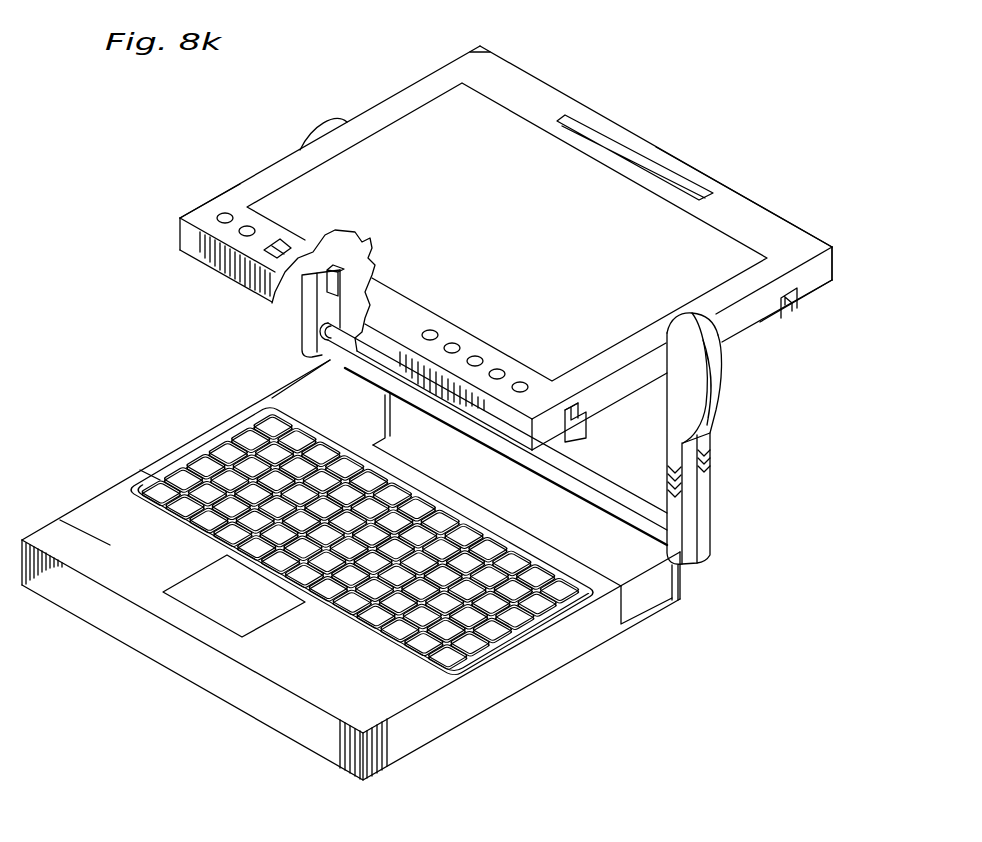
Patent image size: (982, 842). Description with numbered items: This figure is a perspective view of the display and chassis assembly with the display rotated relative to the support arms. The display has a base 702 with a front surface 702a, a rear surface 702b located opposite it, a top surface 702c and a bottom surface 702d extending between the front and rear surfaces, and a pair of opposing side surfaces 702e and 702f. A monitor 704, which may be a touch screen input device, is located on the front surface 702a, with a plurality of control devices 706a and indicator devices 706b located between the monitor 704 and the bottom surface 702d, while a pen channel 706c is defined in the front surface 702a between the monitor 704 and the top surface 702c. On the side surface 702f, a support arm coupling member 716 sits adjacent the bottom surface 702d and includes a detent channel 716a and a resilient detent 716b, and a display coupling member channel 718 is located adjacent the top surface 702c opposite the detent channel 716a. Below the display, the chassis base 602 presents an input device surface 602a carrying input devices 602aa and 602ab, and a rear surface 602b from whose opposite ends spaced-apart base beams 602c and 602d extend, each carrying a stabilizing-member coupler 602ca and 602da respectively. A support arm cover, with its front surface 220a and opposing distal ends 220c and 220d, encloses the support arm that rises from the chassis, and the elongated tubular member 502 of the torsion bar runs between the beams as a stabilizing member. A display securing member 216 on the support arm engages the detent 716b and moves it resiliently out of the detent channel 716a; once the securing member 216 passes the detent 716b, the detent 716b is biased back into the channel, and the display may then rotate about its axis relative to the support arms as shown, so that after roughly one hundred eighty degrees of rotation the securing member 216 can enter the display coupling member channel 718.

The base 702 is at (645, 138).
The front surface 702a is at (470, 60).
The rear surface 702b is at (738, 347).
The top surface 702c is at (722, 178).
The bottom surface 702d is at (212, 255).
The side surface 702e is at (197, 212).
The side surface 702f is at (820, 283).
The monitor 704 is at (518, 209).
The control devices 706a is at (225, 212).
The indicator devices 706b is at (292, 245).
The pen channel 706c is at (600, 115).
The support arm coupling member 716 is at (585, 398).
The detent channel 716a is at (578, 428).
The detent 716b is at (567, 430).
The display coupling member channel 718 is at (792, 308).
The display securing member 216 is at (370, 265).
The front surface 220a is at (302, 302).
The distal end 220c is at (302, 332).
The distal end 220d is at (320, 132).
The elongated tubular member 502 is at (606, 490).
The chassis base 602 is at (522, 690).
The input device surface 602a is at (118, 507).
The input device 602aa is at (182, 468).
The input device 602ab is at (208, 592).
The rear surface 602b is at (443, 481).
The base beam 602c is at (390, 420).
The stabilizing-member coupler 602ca is at (308, 378).
The base beam 602d is at (682, 583).
The stabilizing-member coupler 602da is at (640, 607).